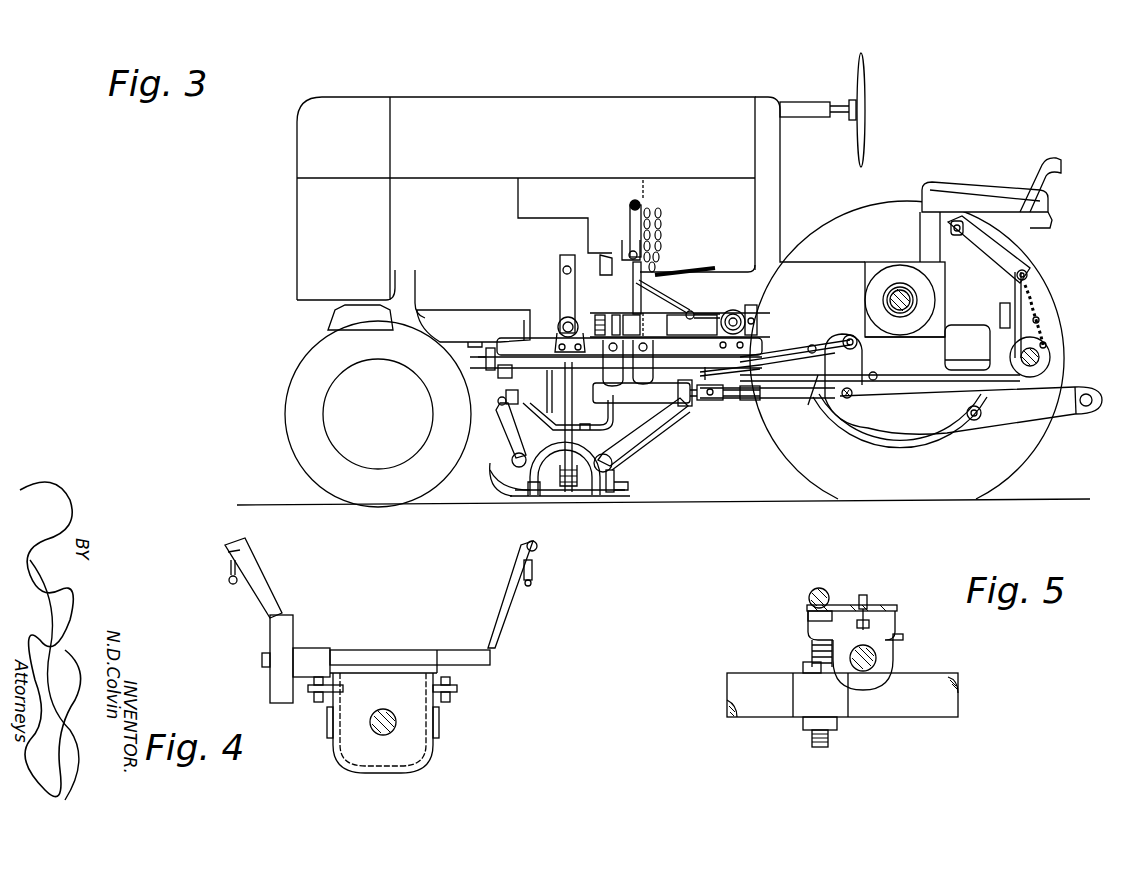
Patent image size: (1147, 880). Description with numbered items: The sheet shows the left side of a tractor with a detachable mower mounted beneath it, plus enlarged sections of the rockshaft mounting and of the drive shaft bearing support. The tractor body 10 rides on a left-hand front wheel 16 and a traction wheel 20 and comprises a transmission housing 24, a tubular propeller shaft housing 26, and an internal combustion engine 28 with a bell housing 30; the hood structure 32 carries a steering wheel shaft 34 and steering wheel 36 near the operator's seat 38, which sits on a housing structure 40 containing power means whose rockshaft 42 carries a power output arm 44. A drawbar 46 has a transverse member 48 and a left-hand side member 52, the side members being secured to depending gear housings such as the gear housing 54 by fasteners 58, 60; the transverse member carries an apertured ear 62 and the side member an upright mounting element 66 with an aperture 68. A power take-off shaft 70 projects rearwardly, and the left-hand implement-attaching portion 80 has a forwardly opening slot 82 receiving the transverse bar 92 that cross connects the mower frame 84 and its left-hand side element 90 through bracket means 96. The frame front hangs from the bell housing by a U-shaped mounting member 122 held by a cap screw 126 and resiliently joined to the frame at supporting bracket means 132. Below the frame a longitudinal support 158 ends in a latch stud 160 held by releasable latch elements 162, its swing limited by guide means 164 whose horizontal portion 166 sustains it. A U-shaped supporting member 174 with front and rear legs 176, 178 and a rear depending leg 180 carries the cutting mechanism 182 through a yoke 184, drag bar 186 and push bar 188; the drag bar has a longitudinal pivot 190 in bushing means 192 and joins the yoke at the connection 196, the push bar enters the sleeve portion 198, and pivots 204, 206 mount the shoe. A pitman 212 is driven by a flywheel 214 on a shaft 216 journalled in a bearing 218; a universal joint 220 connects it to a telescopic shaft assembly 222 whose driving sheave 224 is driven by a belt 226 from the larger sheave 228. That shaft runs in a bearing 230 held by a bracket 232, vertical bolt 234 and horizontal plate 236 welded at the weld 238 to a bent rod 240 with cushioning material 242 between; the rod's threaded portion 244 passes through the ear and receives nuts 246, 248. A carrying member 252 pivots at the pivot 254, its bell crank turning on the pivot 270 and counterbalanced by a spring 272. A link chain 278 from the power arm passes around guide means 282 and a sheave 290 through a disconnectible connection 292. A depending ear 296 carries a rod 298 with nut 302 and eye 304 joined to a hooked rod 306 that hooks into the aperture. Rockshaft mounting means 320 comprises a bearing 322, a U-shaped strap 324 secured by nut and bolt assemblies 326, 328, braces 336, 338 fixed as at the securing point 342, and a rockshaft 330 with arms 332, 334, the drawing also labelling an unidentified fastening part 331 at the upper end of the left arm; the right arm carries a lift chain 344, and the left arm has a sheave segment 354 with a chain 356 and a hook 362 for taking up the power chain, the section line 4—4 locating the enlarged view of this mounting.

In FIG. 3, the tractor body 10 is at (835, 256).
In FIG. 3, the left-hand front wheel 16 is at (298, 438).
In FIG. 3, the right-hand traction wheel 20 is at (1000, 470).
In FIG. 3, the transmission housing 24 is at (790, 262).
In FIG. 3, the tubular propeller shaft housing 26 is at (742, 272).
In FIG. 4, the tubular propeller shaft housing 26 is at (430, 760).
In FIG. 3, the internal combustion engine 28 is at (466, 214).
In FIG. 3, the bell housing 30 is at (540, 226).
In FIG. 3, the radiator grille and hood structure 32 is at (695, 97).
In FIG. 3, the steering wheel shaft 34 is at (826, 104).
In FIG. 3, the steering wheel 36 is at (866, 62).
In FIG. 3, the operator's seat 38 is at (966, 182).
In FIG. 3, the housing structure 40 is at (945, 240).
In FIG. 3, the transverse rockshaft 42 is at (948, 226).
In FIG. 3, the power output arm 44 is at (1012, 268).
In FIG. 3, the drawbar 46 is at (1030, 437).
In FIG. 3, the transverse member 48 is at (1093, 400).
In FIG. 5, the transverse member 48 is at (935, 717).
In FIG. 3, the left-hand side member 52 is at (1082, 418).
In FIG. 3, the right-hand gear housing 54 is at (942, 346).
In FIG. 3, the fastener 58 is at (846, 400).
In FIG. 3, the fastener 60 is at (975, 420).
In FIG. 5, the apertured ear 62 is at (798, 705).
In FIG. 3, the upright mounting element 66 is at (851, 335).
In FIG. 3, the aperture 68 is at (856, 346).
In FIG. 3, the power take-off shaft 70 is at (1000, 318).
In FIG. 3, the left-hand implement-attaching portion 80 is at (757, 312).
In FIG. 3, the forwardly opening slot 82 is at (718, 312).
In FIG. 3, the main mower frame 84 is at (503, 321).
In FIG. 3, the left-hand side element 90 is at (521, 325).
In FIG. 3, the transverse bar 92 is at (756, 321).
In FIG. 3, the bracket means 96 is at (748, 310).
In FIG. 3, the U-shaped mounting member 122 is at (560, 258).
In FIG. 3, the cap screw 126 is at (561, 270).
In FIG. 3, the supporting bracket means 132 is at (558, 328).
In FIG. 3, the longitudinal support 158 is at (496, 378).
In FIG. 3, the latch stud 160 is at (480, 358).
In FIG. 3, the releasable latch elements 162 is at (486, 369).
In FIG. 3, the limit or guide means 164 is at (552, 392).
In FIG. 3, the transverse horizontal portion 166 is at (556, 345).
In FIG. 3, the U-shaped supporting member 174 is at (515, 433).
In FIG. 3, the front leg 176 is at (525, 424).
In FIG. 3, the rear leg 178 is at (608, 412).
In FIG. 3, the rear depending supporting leg 180 is at (686, 406).
In FIG. 3, the mower cutting mechanism 182 is at (642, 500).
In FIG. 3, the yoke 184 is at (500, 492).
In FIG. 3, the drag bar 186 is at (512, 460).
In FIG. 3, the push bar 188 is at (640, 450).
In FIG. 3, the longitudinal pivot 190 is at (506, 398).
In FIG. 3, the bushing means 192 is at (501, 406).
In FIG. 3, the drag bar connection 196 is at (496, 478).
In FIG. 3, the sleeve portion 198 is at (606, 472).
In FIG. 3, the pivot 204 is at (630, 485).
In FIG. 3, the pivot 206 is at (533, 497).
In FIG. 3, the pitman 212 is at (568, 495).
In FIG. 3, the flywheel 214 is at (648, 428).
In FIG. 3, the flywheel shaft 216 is at (600, 428).
In FIG. 3, the longitudinal bearing 218 is at (735, 405).
In FIG. 3, the universal joint connection 220 is at (748, 402).
In FIG. 3, the telescopic shaft assembly 222 is at (776, 400).
In FIG. 5, the telescopic shaft assembly 222 is at (877, 658).
In FIG. 3, the driving sheave 224 is at (1008, 386).
In FIG. 3, the driving belt 226 is at (1020, 312).
In FIG. 3, the larger sheave 228 is at (1032, 330).
In FIG. 5, the bearing 230 is at (896, 668).
In FIG. 5, the bracket 232 is at (895, 630).
In FIG. 5, the vertical bolt 234 is at (865, 594).
In FIG. 5, the horizontal plate 236 is at (870, 612).
In FIG. 5, the weld 238 is at (810, 606).
In FIG. 3, the bent rod 240 is at (1052, 382).
In FIG. 5, the bent rod 240 is at (819, 588).
In FIG. 5, the cushioning material 242 is at (898, 608).
In FIG. 5, the threaded portion 244 is at (812, 652).
In FIG. 5, the upper adjusting and lock nut 246 is at (803, 667).
In FIG. 5, the lower adjusting and lock nut 248 is at (806, 732).
In FIG. 3, the carrying member 252 is at (691, 311).
In FIG. 3, the pivot 254 is at (660, 290).
In FIG. 3, the bell crank pivot 270 is at (732, 386).
In FIG. 3, the counterbalancing and assist spring 272 is at (618, 315).
In FIG. 3, the link chain 278 is at (1040, 345).
In FIG. 3, the guide means 282 is at (634, 396).
In FIG. 3, the sheave 290 is at (1050, 362).
In FIG. 3, the disconnectible connection 292 is at (1028, 288).
In FIG. 3, the depending apertured ear 296 is at (730, 368).
In FIG. 3, the rod 298 is at (791, 366).
In FIG. 3, the nut 302 is at (629, 346).
In FIG. 3, the eye 304 is at (810, 353).
In FIG. 3, the hooked rod 306 is at (812, 346).
In FIG. 3, the rockshaft mounting means 320 is at (618, 203).
In FIG. 4, the rockshaft mounting means 320 is at (430, 630).
In FIG. 4, the bearing 322 is at (378, 665).
In FIG. 3, the U-shaped strap 324 is at (662, 275).
In FIG. 4, the U-shaped strap 324 is at (360, 773).
In FIG. 4, the nut and bolt assembly 326 is at (450, 703).
In FIG. 4, the nut and bolt assembly 328 is at (316, 703).
In FIG. 3, the transverse rockshaft 330 is at (630, 240).
In FIG. 4, the transverse rockshaft 330 is at (345, 650).
In FIG. 3, the bolt 331 is at (630, 207).
In FIG. 4, the right-hand power-transmitting arm 332 is at (504, 638).
In FIG. 4, the left-hand power-transmitting arm 334 is at (252, 605).
In FIG. 4, the right-hand brace 336 is at (440, 735).
In FIG. 3, the left-hand brace 338 is at (655, 280).
In FIG. 4, the left-hand brace 338 is at (327, 738).
In FIG. 3, the brace securing point 342 is at (718, 270).
In FIG. 4, the lift chain 344 is at (534, 578).
In FIG. 3, the sheave segment 354 is at (622, 250).
In FIG. 4, the sheave segment 354 is at (268, 692).
In FIG. 3, the chain 356 is at (662, 212).
In FIG. 4, the chain 356 is at (228, 578).
In FIG. 3, the hook 362 is at (618, 254).
In FIG. 3, the section line 4 is at (631, 193).